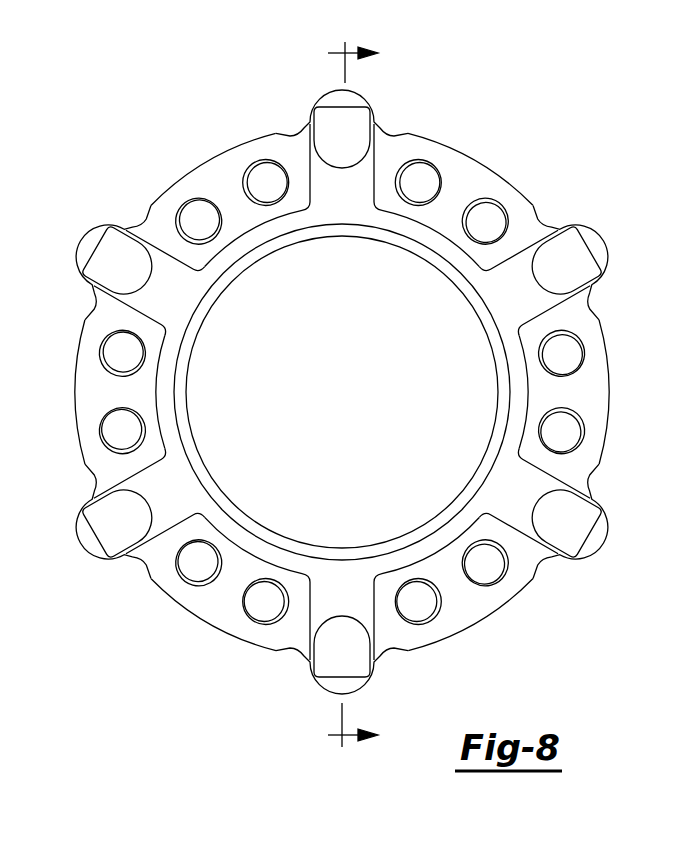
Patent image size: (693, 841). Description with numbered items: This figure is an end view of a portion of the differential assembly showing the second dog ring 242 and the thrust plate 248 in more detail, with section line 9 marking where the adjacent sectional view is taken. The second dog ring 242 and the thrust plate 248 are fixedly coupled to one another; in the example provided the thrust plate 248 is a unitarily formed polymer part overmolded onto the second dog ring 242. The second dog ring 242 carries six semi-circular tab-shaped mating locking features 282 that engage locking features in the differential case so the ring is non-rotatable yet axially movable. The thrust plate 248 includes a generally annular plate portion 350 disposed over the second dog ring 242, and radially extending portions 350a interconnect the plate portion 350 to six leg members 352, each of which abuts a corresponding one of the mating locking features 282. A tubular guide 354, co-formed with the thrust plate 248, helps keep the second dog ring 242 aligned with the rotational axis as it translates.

The section line 9- 9 is at (341, 396).
The second dog ring 242 is at (462, 183).
The thrust plate 248 is at (196, 497).
The mating locking features 282 is at (598, 285).
The plate portion 350 is at (507, 305).
The radially extending portions 350a is at (522, 482).
The leg members 352 is at (570, 247).
The guide 354 is at (192, 423).